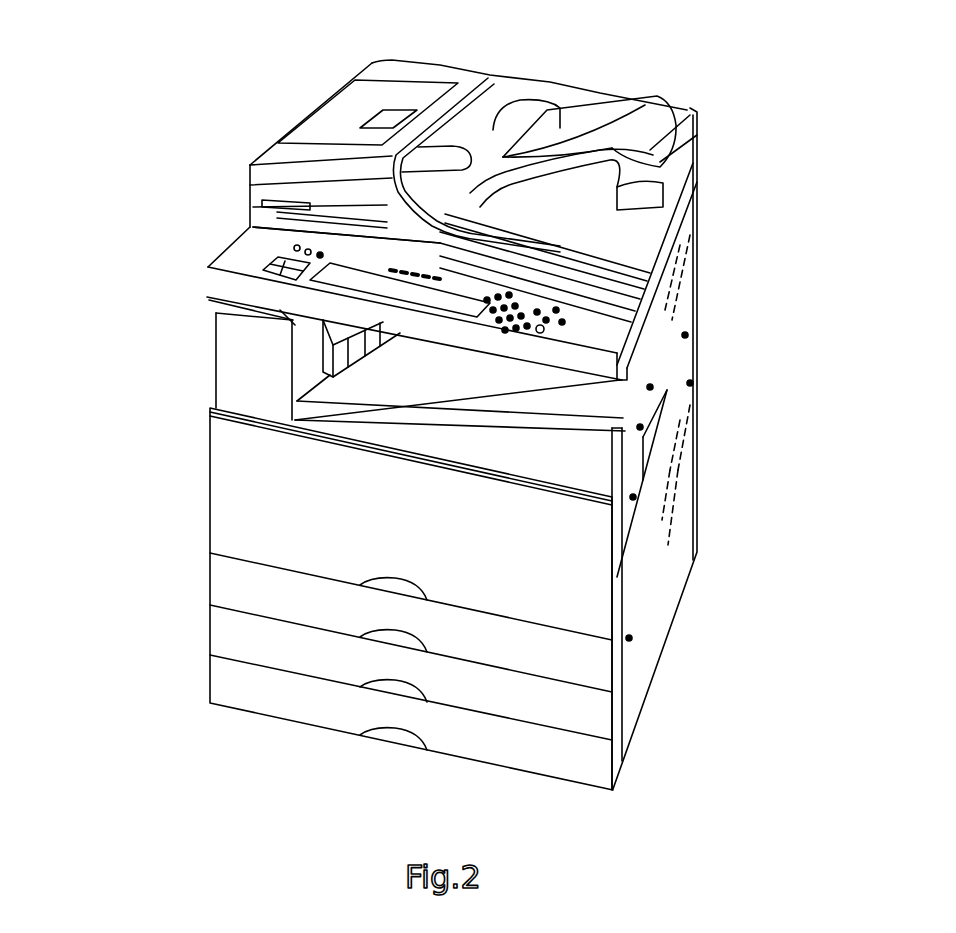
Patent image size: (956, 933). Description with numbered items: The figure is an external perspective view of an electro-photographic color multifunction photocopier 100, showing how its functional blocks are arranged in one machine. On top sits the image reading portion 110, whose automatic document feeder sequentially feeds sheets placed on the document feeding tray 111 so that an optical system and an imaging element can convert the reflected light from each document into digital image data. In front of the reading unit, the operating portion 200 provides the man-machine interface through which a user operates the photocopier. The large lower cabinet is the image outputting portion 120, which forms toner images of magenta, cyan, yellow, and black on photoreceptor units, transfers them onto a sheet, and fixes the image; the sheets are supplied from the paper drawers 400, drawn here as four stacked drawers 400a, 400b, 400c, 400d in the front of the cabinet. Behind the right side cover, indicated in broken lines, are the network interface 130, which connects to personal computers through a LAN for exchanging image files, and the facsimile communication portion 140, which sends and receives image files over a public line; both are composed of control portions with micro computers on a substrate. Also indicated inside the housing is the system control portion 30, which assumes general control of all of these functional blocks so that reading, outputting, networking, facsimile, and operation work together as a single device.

The electro-photographic color multifunction photocopier 100 is at (162, 46).
The image reading portion 110 is at (712, 138).
The document feeding tray 111 is at (578, 117).
The image outputting portion 120 is at (220, 471).
The network interface 130 is at (686, 424).
The facsimile communication portion 140 is at (690, 487).
The system control portion 30 is at (697, 257).
The operating portion 200 is at (245, 248).
The paper drawers 400 is at (105, 508).
The paper drawer 400a is at (225, 542).
The paper drawer 400b is at (225, 587).
The paper drawer 400c is at (225, 637).
The paper drawer 400d is at (225, 682).